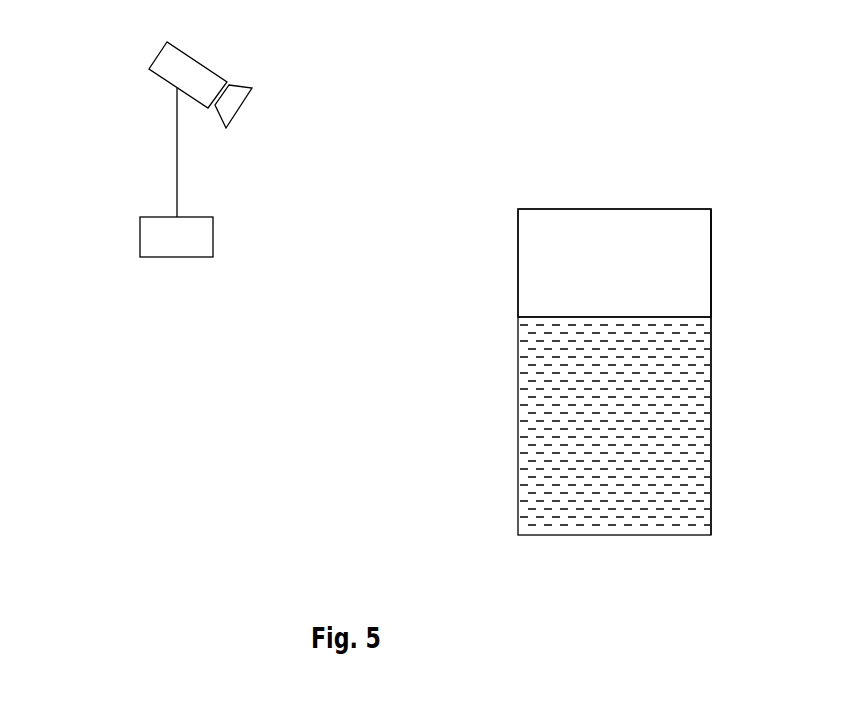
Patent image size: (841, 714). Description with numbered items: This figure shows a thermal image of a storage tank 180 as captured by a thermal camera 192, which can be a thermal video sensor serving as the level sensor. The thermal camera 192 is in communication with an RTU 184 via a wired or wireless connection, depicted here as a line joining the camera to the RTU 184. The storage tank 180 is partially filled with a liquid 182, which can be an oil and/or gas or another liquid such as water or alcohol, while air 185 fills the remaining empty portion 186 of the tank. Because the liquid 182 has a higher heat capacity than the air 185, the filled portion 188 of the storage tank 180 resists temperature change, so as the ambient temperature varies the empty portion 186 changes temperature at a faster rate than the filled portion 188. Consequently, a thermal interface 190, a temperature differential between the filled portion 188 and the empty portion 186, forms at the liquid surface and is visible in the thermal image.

The storage tank 180 is at (543, 152).
The liquid 182 is at (543, 418).
The RTU 184 is at (140, 237).
The air 185 is at (542, 239).
The empty portion 186 is at (723, 266).
The filled portion 188 is at (723, 418).
The thermal interface 190 is at (614, 317).
The thermal camera 192 is at (149, 66).